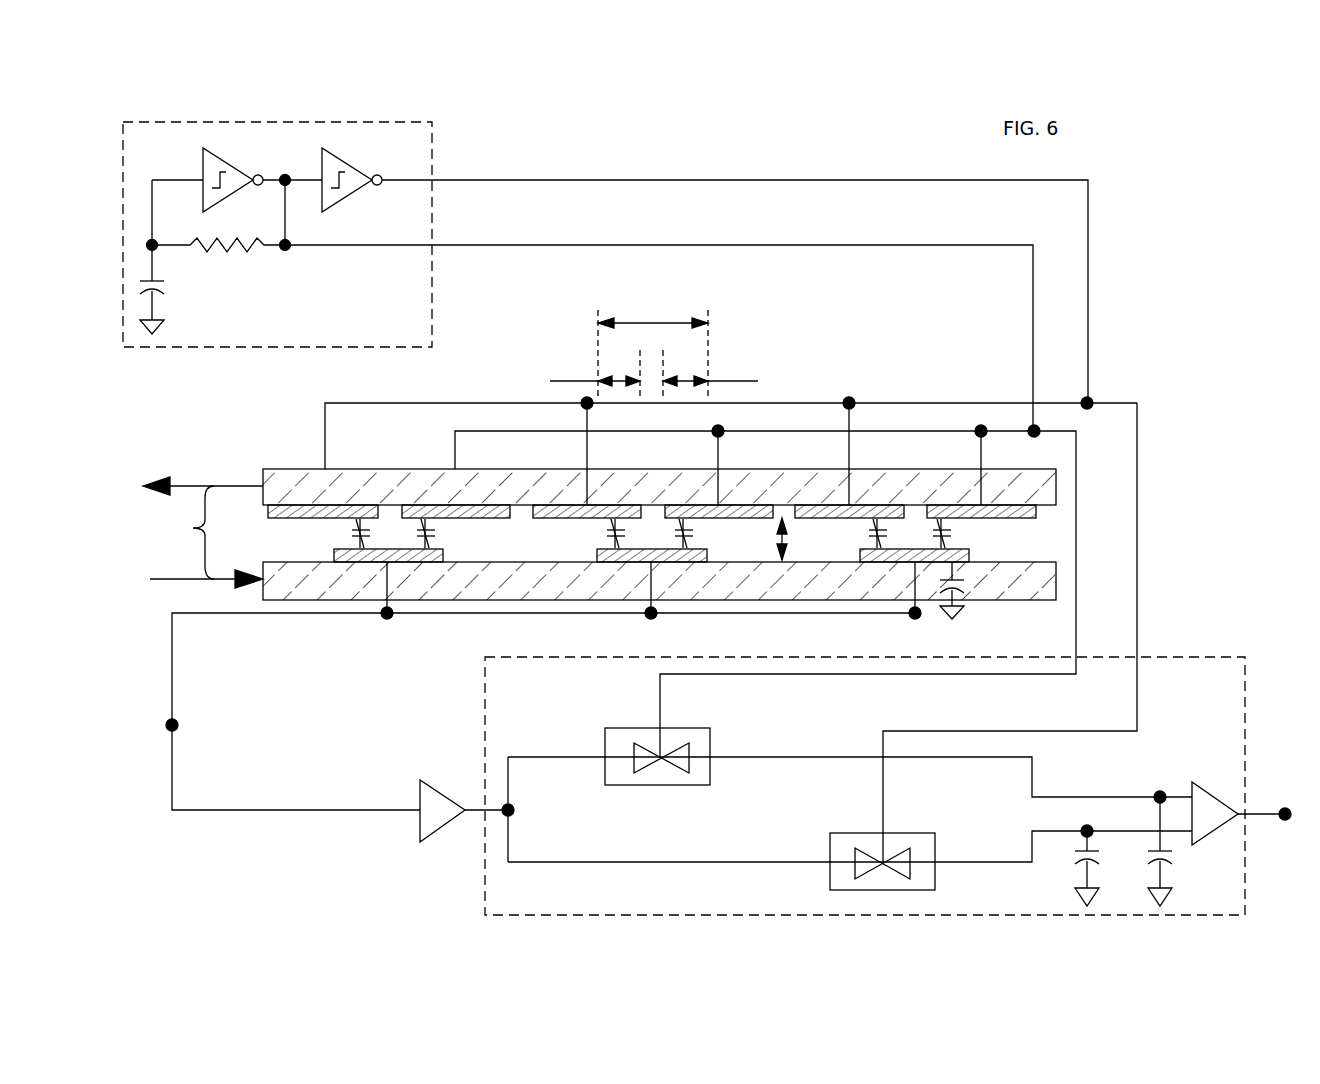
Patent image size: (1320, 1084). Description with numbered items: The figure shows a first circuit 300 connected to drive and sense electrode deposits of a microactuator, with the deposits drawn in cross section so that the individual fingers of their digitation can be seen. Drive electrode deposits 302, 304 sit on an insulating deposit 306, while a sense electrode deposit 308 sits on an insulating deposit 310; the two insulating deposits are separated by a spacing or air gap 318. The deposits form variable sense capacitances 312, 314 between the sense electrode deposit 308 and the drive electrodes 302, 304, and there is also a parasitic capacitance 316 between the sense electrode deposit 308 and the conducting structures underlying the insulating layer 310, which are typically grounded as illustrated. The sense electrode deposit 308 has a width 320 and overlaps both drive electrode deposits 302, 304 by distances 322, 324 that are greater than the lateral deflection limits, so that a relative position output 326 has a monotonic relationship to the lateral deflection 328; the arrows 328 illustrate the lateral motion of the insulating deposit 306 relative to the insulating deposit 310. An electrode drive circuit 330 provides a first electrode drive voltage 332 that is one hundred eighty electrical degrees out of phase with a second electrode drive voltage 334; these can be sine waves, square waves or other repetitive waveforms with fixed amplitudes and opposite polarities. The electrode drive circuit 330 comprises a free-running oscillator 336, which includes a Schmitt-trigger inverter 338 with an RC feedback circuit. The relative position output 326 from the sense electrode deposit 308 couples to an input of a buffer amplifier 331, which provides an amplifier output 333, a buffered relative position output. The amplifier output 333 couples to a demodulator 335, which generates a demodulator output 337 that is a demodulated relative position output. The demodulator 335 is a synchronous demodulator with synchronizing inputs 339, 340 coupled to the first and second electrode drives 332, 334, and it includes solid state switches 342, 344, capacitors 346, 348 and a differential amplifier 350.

The first circuit 300 is at (740, 148).
The drive electrode deposit 302 is at (303, 505).
The drive electrode deposit 304 is at (488, 505).
The insulating deposit 306 is at (384, 492).
The sense electrode deposit 308 is at (352, 560).
The insulating deposit 310 is at (296, 585).
The variable sense capacitance 312 is at (350, 535).
The variable sense capacitance 314 is at (440, 531).
The parasitic capacitance 316 is at (975, 580).
The air gap 318 is at (793, 535).
The width 320 is at (670, 292).
The overlap distance 322 is at (596, 379).
The overlap distance 324 is at (718, 381).
The relative position output 326 is at (176, 728).
The lateral deflection 328 is at (203, 532).
The electrode drive circuit 330 is at (432, 123).
The buffer amplifier 331 is at (437, 785).
The first electrode drive voltage 332 is at (540, 182).
The amplifier output 333 is at (470, 812).
The second electrode drive voltage 334 is at (752, 246).
The demodulator 335 is at (485, 690).
The free-running oscillator 336 is at (296, 284).
The demodulator output 337 is at (1285, 808).
The Schmitt-trigger inverter 338 is at (230, 166).
The synchronizing input 339 is at (1137, 590).
The synchronizing input 340 is at (1077, 508).
The solid state switch 342 is at (690, 730).
The solid state switch 344 is at (862, 833).
The capacitor 346 is at (1075, 860).
The capacitor 348 is at (1170, 860).
The differential amplifier 350 is at (1215, 790).